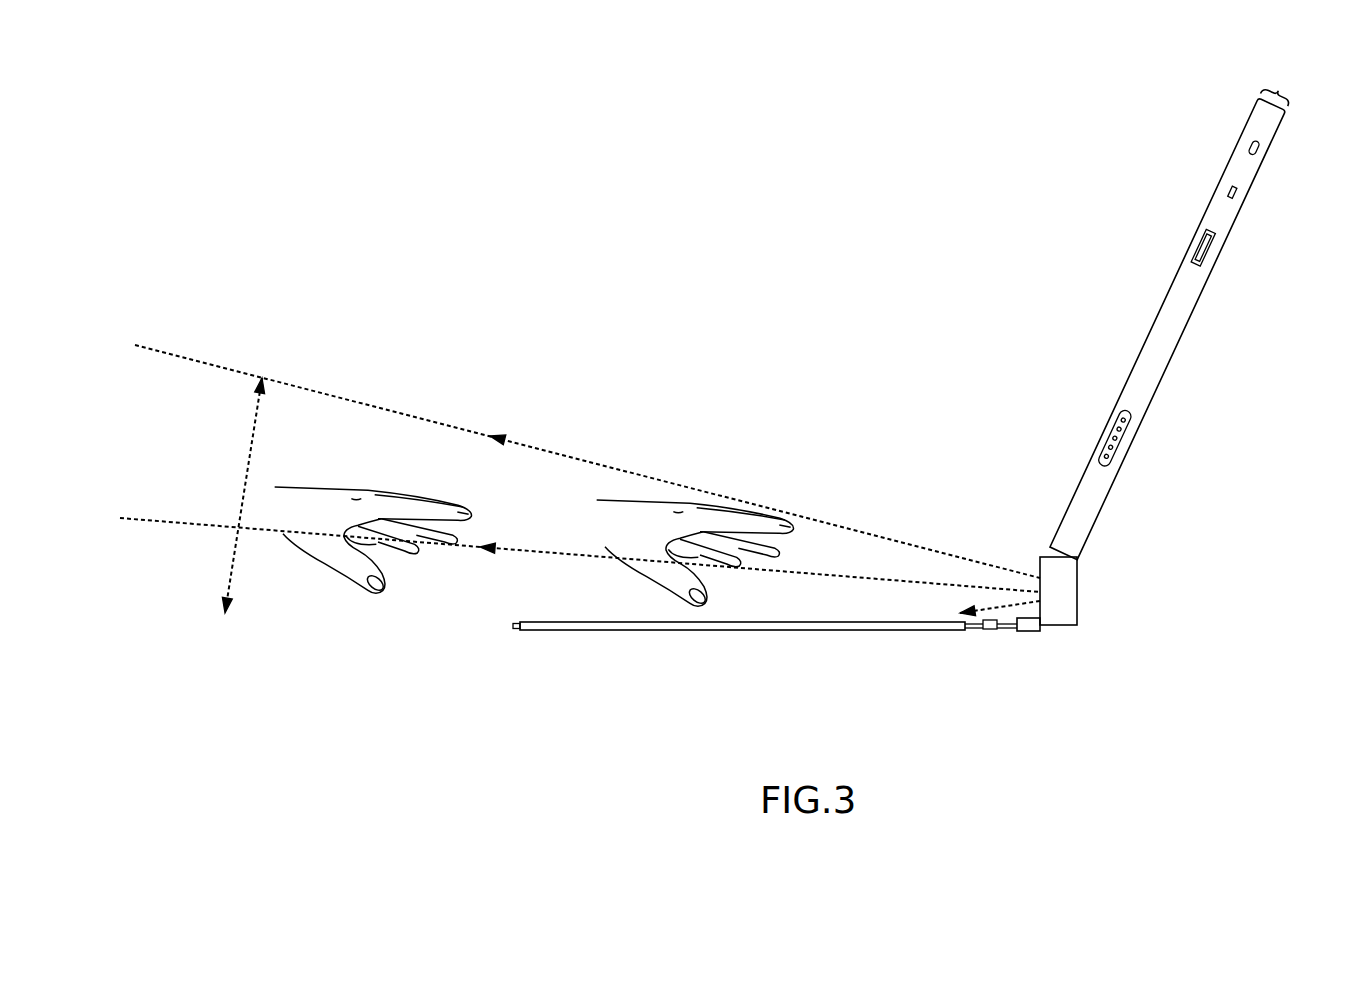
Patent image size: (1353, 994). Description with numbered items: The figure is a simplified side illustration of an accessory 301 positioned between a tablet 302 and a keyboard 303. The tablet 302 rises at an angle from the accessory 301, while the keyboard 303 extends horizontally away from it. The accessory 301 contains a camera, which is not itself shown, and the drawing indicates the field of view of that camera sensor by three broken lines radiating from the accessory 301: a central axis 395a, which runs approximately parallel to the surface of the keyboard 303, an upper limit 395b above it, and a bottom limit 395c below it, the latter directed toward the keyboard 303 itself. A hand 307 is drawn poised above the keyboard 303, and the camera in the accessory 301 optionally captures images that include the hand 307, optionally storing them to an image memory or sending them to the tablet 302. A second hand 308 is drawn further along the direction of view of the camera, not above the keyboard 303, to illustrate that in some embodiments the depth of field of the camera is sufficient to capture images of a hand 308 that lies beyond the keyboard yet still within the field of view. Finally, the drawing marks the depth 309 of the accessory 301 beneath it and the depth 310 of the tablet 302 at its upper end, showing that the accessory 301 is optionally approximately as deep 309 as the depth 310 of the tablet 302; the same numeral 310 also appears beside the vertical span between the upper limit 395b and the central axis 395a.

The accessory 301 is at (1078, 590).
The tablet 302 is at (1160, 298).
The keyboard 303 is at (777, 637).
The hand 307 is at (695, 553).
The hand 308 is at (373, 540).
The depth of the accessory 309 is at (1078, 646).
The depth of the tablet 310 is at (768, 335).
The central axis of the FOV 395a is at (580, 555).
The upper limit of the FOV 395b is at (587, 461).
The bottom limit of the FOV 395c is at (1018, 606).